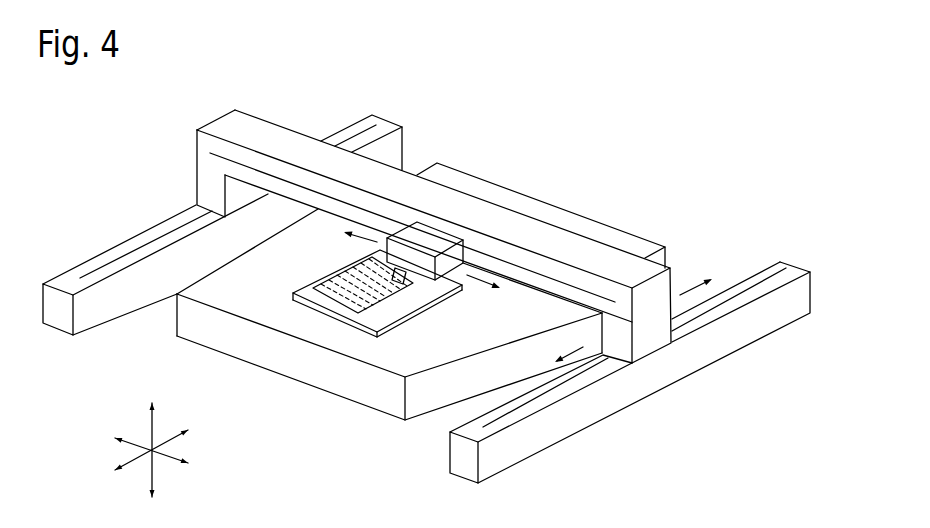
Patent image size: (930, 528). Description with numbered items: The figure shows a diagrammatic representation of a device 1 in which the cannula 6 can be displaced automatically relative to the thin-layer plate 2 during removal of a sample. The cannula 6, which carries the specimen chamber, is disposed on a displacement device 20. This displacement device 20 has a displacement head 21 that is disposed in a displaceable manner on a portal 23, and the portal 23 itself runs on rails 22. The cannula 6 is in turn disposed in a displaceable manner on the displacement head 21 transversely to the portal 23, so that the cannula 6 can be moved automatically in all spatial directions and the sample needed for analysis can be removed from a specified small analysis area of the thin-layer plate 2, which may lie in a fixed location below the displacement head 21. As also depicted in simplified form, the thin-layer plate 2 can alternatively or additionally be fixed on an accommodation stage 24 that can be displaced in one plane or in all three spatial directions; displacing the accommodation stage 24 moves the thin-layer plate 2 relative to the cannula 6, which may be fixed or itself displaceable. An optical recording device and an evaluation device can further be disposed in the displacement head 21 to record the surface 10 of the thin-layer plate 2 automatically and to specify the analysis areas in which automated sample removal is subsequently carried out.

The device 1 is at (627, 103).
The thin-layer plate 2 is at (352, 316).
The cannula 6 is at (405, 287).
The surface 10 is at (297, 310).
The displacement device 20 is at (650, 226).
The displacement head 21 is at (433, 238).
The rails 22 is at (388, 127).
The portal 23 is at (277, 137).
The accommodation stage 24 is at (357, 389).